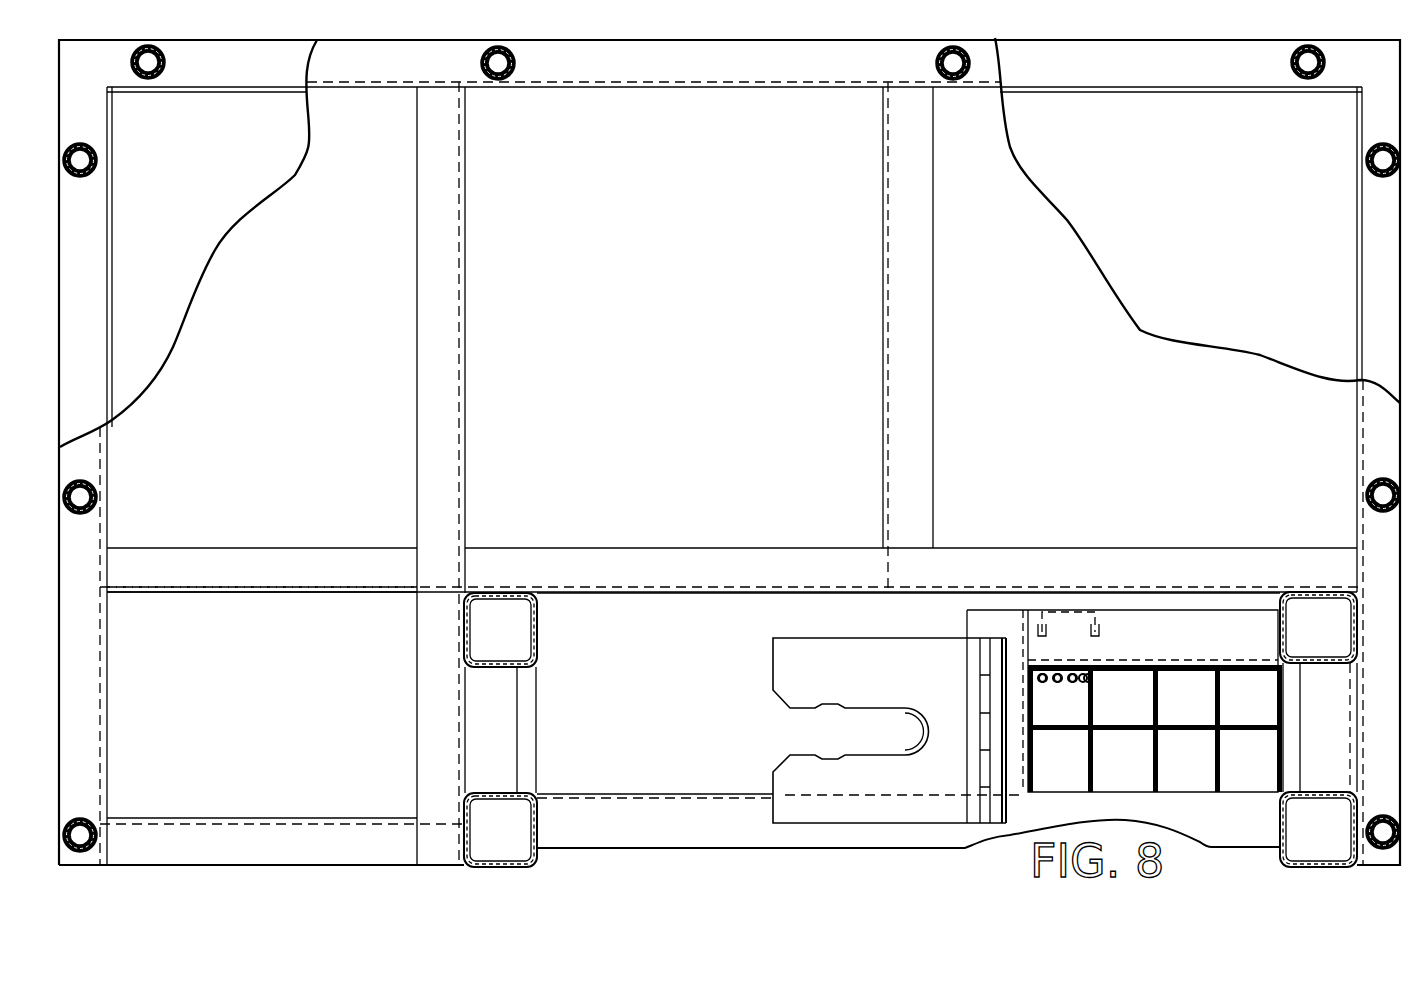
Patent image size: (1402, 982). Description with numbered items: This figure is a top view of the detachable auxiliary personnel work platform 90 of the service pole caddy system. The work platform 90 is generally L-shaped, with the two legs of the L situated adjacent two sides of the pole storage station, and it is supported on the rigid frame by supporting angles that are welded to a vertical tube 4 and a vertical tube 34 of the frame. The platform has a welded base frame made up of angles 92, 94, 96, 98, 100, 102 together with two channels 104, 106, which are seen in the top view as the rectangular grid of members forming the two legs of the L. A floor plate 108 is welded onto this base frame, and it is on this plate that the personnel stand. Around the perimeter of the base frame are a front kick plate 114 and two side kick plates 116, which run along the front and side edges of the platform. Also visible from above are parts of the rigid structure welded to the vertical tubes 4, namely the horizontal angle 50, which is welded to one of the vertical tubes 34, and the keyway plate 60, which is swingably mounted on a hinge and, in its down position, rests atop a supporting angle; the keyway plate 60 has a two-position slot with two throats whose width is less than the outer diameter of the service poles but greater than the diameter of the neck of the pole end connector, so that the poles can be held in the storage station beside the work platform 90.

The vertical tube 4 is at (540, 810).
The vertical tube 34 is at (540, 620).
The horizontal angle 50 is at (1164, 644).
The keyway plate 60 is at (880, 679).
The auxiliary personnel work platform 90 is at (628, 602).
The angle 92 is at (192, 837).
The angle 94 is at (235, 568).
The angle 96 is at (530, 565).
The angle 98 is at (733, 63).
The angle 100 is at (83, 455).
The angle 102 is at (915, 478).
The channel 104 is at (1387, 438).
The channel 106 is at (430, 663).
The floor plate 108 is at (184, 177).
The front kick plate 114 is at (200, 92).
The side kick plate 116 is at (110, 227).